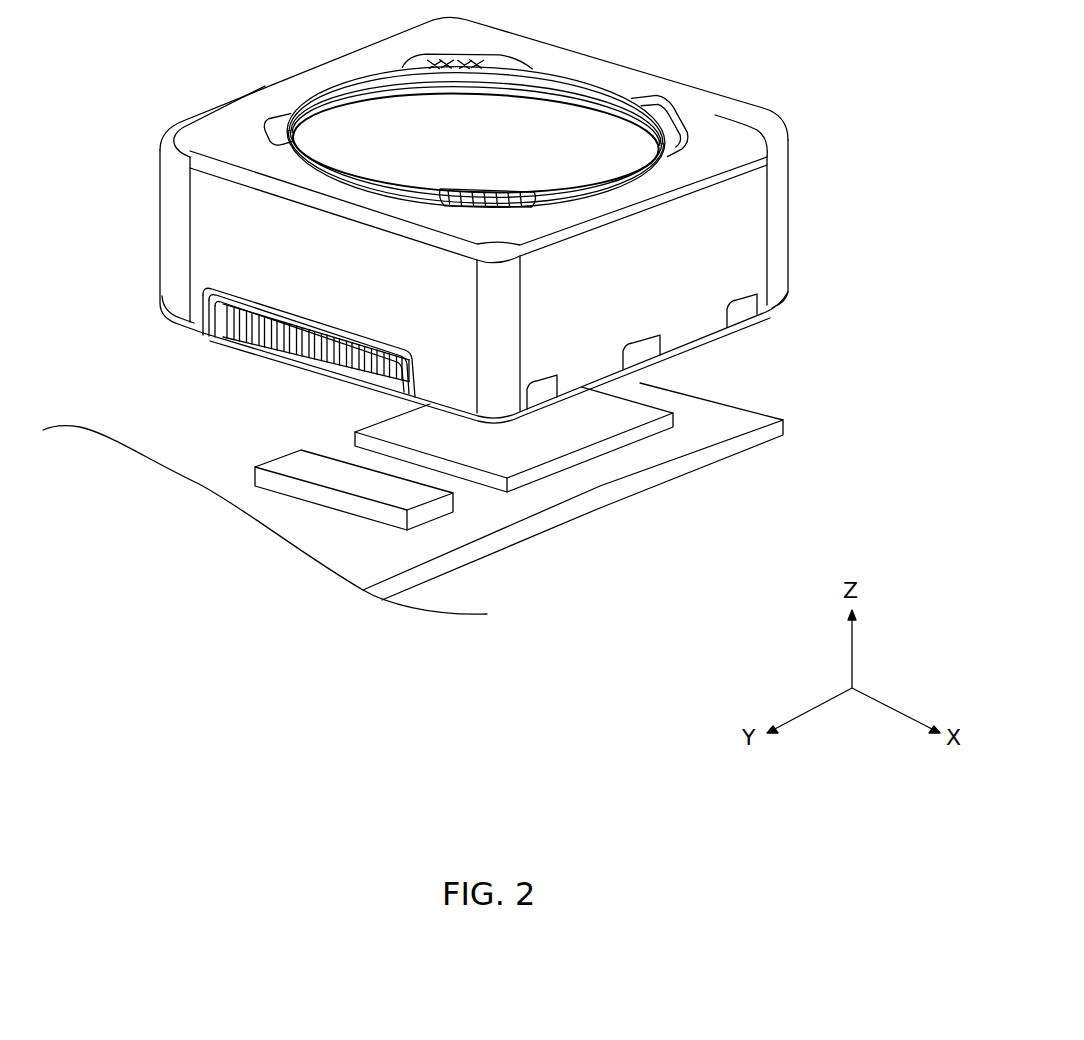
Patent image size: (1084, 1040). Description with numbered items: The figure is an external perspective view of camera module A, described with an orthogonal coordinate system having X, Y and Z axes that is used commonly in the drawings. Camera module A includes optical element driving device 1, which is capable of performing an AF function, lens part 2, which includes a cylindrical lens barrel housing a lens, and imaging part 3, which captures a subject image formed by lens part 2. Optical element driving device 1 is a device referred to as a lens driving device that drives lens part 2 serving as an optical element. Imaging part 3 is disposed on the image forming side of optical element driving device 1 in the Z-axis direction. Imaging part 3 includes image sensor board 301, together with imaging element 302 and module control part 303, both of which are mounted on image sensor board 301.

The camera module A is at (760, 82).
The optical element driving device 1 is at (782, 265).
The lens part 2 is at (617, 98).
The imaging part 3 is at (212, 433).
The image sensor board 301 is at (785, 425).
The imaging element 302 is at (573, 445).
The module control part 303 is at (442, 508).